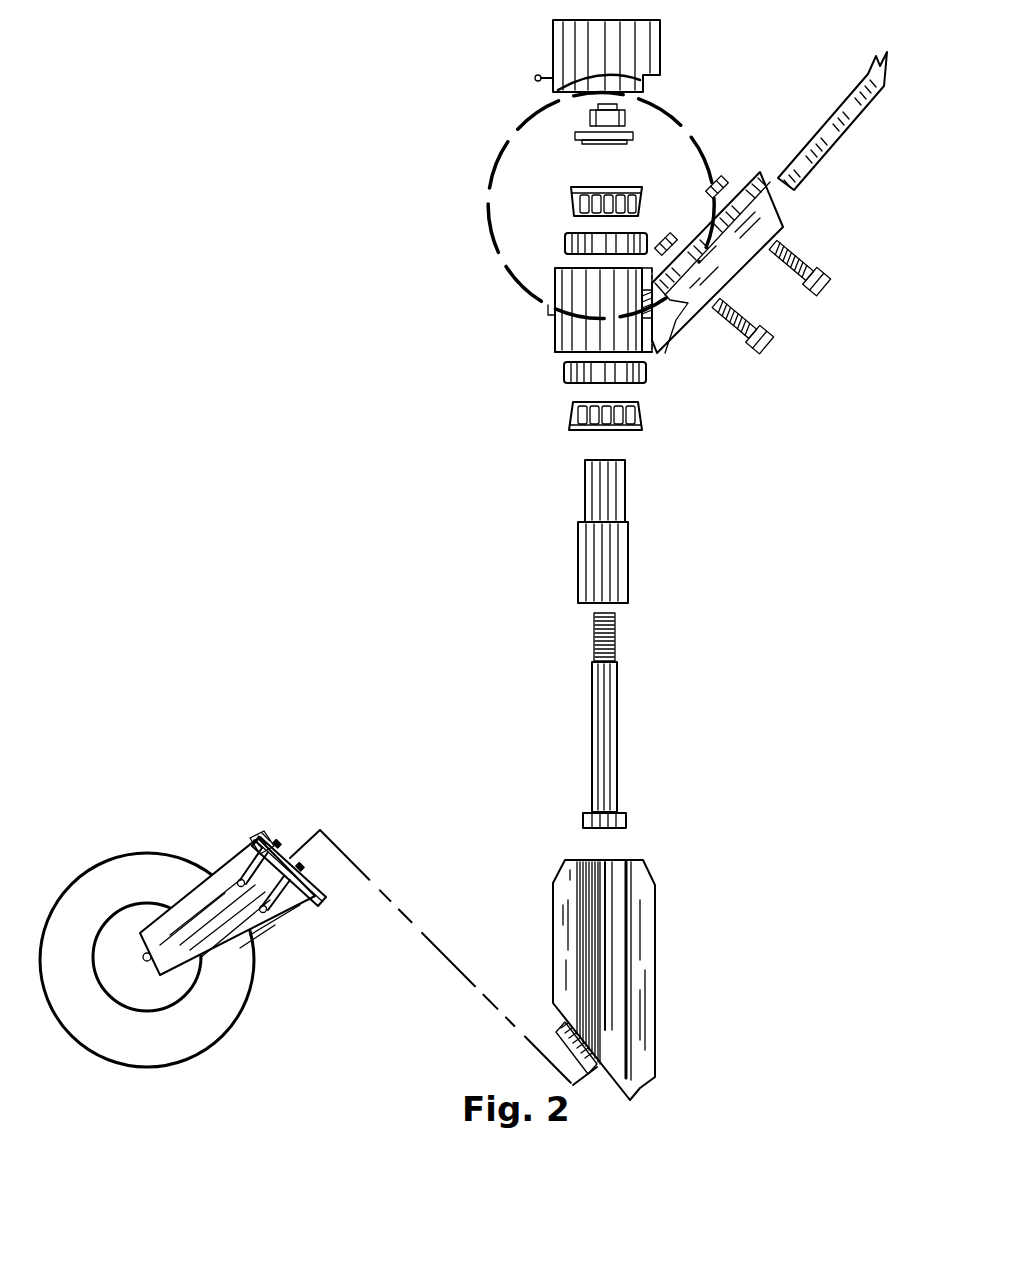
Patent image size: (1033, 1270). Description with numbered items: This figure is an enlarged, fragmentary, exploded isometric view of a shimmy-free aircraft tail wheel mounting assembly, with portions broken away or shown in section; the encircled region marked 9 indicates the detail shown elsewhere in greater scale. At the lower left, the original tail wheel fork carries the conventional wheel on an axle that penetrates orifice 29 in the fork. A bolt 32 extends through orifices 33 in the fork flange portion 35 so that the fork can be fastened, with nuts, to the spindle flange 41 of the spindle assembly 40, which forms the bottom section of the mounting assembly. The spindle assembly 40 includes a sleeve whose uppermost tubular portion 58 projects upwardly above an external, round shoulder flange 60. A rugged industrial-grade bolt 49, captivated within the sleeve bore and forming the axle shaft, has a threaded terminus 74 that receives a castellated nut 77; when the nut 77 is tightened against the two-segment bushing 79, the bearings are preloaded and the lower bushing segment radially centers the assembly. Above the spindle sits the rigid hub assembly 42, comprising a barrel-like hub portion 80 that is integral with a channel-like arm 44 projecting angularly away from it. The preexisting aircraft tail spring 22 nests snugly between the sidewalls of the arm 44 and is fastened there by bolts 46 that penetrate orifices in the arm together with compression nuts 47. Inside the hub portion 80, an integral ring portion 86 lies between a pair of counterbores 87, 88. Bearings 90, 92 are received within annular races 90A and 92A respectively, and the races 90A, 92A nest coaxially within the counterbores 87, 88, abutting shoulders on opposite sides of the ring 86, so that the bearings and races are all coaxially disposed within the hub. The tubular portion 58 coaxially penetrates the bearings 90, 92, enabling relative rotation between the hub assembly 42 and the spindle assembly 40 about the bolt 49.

The detail region shown in FIG. 9 is at (495, 148).
The aircraft tail spring 22 is at (812, 140).
The orifice 29 is at (147, 962).
The bolt 32 is at (243, 877).
The orifices 33 is at (267, 850).
The fork flange portion 35 is at (314, 900).
The spindle assembly 40 is at (686, 929).
The spindle flange 41 is at (637, 1097).
The hub assembly 42 is at (672, 365).
The arm 44 is at (763, 203).
The bolts 46 is at (821, 293).
The compression nuts 47 is at (720, 180).
The bolt 49 is at (596, 834).
The tubular portion 58 is at (615, 485).
The shoulder flange 60 is at (650, 948).
The threaded terminus 74 is at (613, 633).
The castellated nut 77 is at (628, 118).
The bushing 79 is at (640, 137).
The hub portion 80 is at (567, 298).
The ring portion 86 is at (640, 293).
The counterbore 87 is at (640, 272).
The counterbore 88 is at (640, 350).
The bearing 90 is at (568, 197).
The annular race 90A is at (566, 243).
The bearing 92 is at (566, 424).
The annular race 92A is at (565, 380).